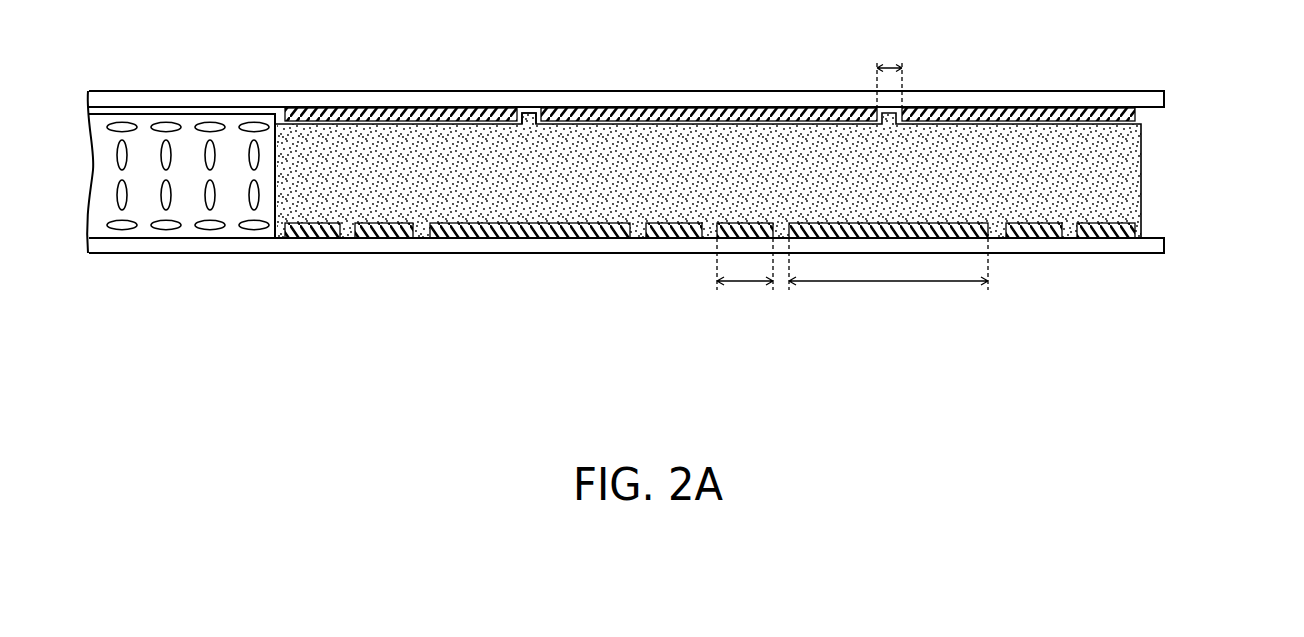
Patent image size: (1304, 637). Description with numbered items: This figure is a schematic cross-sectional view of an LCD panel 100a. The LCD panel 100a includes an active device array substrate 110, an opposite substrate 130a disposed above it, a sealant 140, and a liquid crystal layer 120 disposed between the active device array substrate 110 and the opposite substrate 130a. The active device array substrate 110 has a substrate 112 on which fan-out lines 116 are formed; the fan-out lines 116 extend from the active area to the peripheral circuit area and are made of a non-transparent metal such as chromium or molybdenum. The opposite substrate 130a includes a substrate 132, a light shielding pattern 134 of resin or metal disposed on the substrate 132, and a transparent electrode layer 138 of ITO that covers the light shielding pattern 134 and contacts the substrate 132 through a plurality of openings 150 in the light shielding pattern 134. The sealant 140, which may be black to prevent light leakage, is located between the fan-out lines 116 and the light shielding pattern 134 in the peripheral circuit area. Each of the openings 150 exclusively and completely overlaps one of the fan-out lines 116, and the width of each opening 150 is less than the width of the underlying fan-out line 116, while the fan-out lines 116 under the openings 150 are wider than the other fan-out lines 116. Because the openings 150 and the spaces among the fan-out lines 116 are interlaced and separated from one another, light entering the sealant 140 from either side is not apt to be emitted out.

The LCD panel 100a is at (656, 214).
The active device array substrate 110 is at (687, 268).
The substrate 112 is at (1130, 247).
The fan-out lines 116 is at (1137, 227).
The liquid crystal layer 120 is at (100, 177).
The opposite substrate 130a is at (693, 142).
The substrate 132 is at (1143, 97).
The light shielding pattern 134 is at (1170, 121).
The transparent electrode layer 138 is at (754, 175).
The sealant 140 is at (1103, 182).
The openings 150 is at (535, 108).